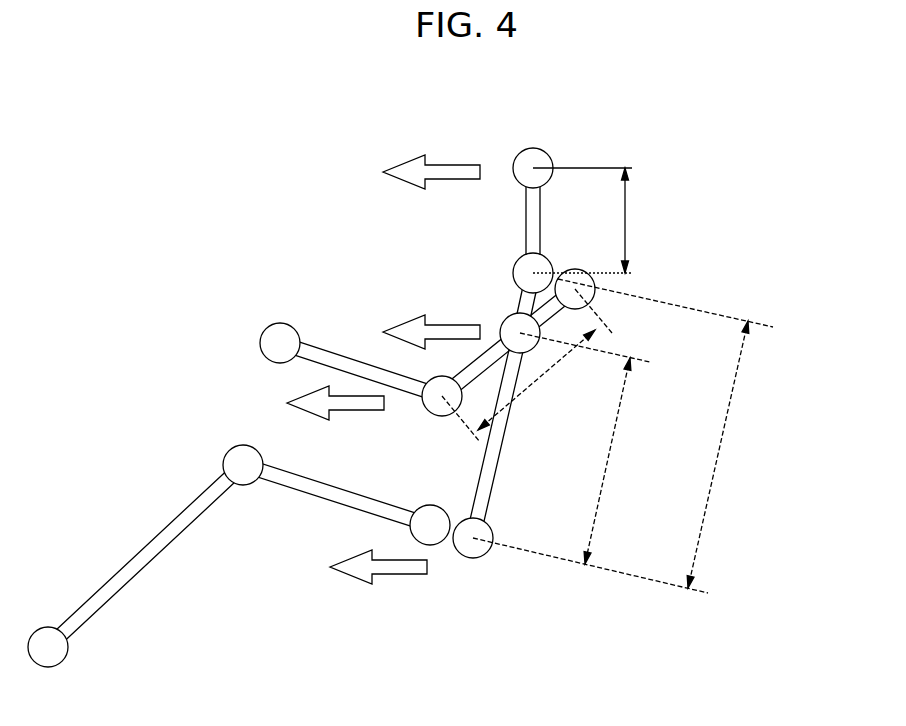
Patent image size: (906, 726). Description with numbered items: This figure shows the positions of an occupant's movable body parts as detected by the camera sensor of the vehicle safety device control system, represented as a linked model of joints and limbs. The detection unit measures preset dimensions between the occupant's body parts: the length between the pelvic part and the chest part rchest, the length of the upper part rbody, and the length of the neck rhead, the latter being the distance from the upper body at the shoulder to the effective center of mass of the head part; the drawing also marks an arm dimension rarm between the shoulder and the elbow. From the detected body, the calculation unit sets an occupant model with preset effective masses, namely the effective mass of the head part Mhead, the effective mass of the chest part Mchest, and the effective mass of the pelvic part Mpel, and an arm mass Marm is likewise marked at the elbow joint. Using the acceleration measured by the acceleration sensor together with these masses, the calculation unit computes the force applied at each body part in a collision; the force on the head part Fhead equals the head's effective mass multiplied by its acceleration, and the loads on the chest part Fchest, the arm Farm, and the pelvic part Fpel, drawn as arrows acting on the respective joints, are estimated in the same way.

The effective mass of the head part Mhead is at (529, 163).
The effective mass of the chest part Mchest is at (515, 327).
The arm mass Marm is at (432, 404).
The effective mass of the pelvic part Mpel is at (475, 548).
The force applied to the head part Fhead is at (387, 167).
The force applied to chest Fchest is at (396, 317).
The force applied to arm Farm is at (305, 398).
The force applied to pelvis Fpel is at (378, 590).
The length of the neck rhead is at (616, 220).
The arm distance rarm is at (527, 365).
The length between the pelvic part and the chest part rchest is at (604, 448).
The length of the upper part rbody is at (634, 436).